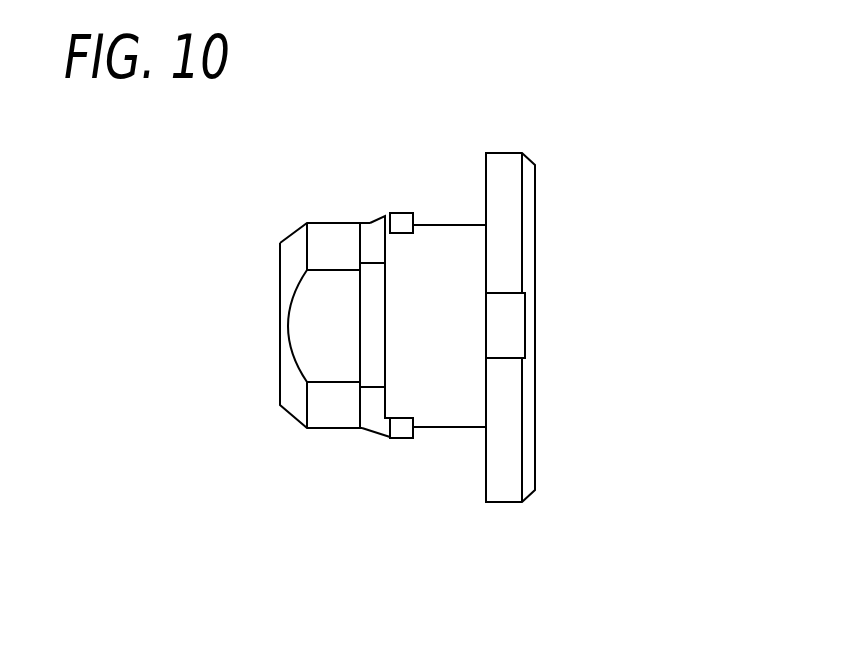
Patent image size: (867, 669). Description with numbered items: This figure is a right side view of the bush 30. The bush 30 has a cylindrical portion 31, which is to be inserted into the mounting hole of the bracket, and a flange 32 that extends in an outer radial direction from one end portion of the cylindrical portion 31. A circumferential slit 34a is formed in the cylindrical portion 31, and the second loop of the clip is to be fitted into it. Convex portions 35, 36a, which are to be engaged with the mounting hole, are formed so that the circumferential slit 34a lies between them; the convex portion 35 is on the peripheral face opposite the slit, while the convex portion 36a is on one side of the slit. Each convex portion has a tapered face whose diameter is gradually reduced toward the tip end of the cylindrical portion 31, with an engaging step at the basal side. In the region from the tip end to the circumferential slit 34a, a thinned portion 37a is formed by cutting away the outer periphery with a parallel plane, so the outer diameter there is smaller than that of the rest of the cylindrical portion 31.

The bush 30 is at (566, 255).
The cylindrical portion 31 is at (438, 410).
The flange 32 is at (507, 410).
The circumferential slit 34a is at (370, 338).
The convex portion 35 is at (407, 213).
The convex portion 36a is at (403, 438).
The thinned portion 37a is at (307, 318).